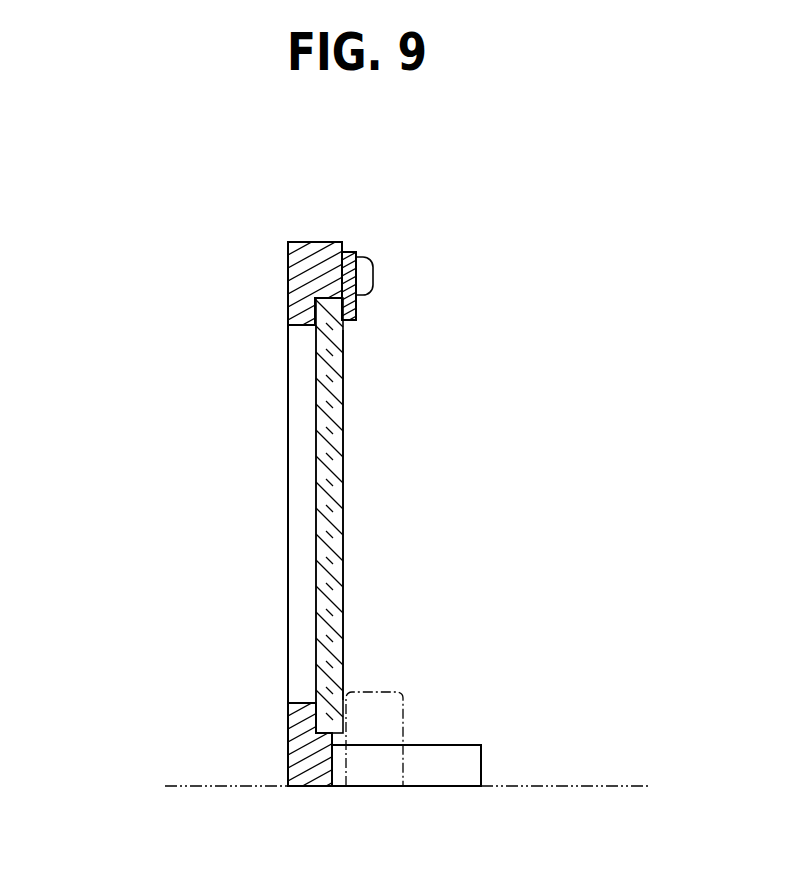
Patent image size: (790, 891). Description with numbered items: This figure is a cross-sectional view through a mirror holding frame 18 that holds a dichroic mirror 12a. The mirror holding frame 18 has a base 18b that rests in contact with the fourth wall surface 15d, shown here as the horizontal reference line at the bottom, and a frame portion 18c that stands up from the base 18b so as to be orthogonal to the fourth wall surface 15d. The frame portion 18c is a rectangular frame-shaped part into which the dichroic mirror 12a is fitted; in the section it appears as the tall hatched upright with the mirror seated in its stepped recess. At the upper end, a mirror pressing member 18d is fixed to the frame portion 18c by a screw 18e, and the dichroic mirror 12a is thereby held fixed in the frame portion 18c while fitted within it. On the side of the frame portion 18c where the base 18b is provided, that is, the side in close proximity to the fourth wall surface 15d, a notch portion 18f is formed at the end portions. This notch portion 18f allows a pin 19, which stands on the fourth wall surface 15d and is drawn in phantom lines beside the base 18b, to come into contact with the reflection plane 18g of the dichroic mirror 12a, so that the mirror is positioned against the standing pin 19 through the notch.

The mirror holding frame 18 is at (288, 362).
The frame portion 18c is at (322, 242).
The mirror pressing member 18d is at (356, 313).
The screw 18e is at (373, 272).
The dichroic mirror 12a is at (330, 455).
The reflection plane 18g is at (343, 521).
The notch portion 18f is at (333, 763).
The base 18b is at (458, 745).
The pin 19 is at (383, 690).
The fourth wall surface 15d is at (630, 786).